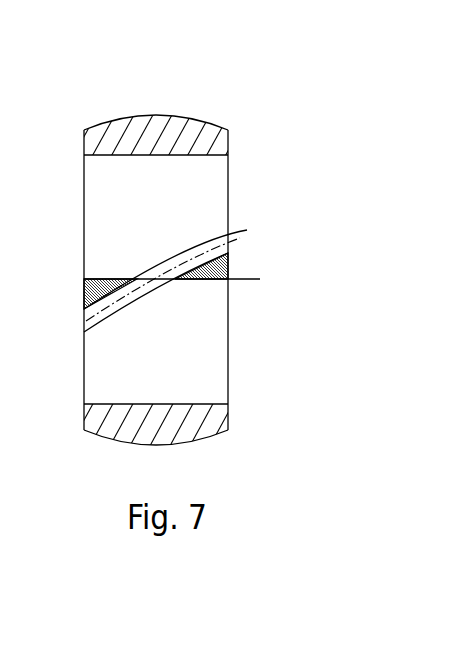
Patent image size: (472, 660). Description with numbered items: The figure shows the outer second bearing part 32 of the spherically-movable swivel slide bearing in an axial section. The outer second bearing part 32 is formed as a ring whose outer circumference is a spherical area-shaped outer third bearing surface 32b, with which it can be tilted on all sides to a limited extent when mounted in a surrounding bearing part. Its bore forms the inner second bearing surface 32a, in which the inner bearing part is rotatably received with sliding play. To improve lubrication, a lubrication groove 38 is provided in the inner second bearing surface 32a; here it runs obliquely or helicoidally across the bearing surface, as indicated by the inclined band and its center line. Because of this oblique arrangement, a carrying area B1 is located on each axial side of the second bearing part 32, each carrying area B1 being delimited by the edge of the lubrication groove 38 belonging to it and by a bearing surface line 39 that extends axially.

The outer second bearing part 32 is at (190, 142).
The inner second bearing surface 32a is at (215, 157).
The spherical area-shaped outer third bearing surface 32b is at (142, 114).
The lubrication groove 38 is at (84, 323).
The bearing surface line 39 is at (250, 280).
The carrying area B1 is at (84, 291).